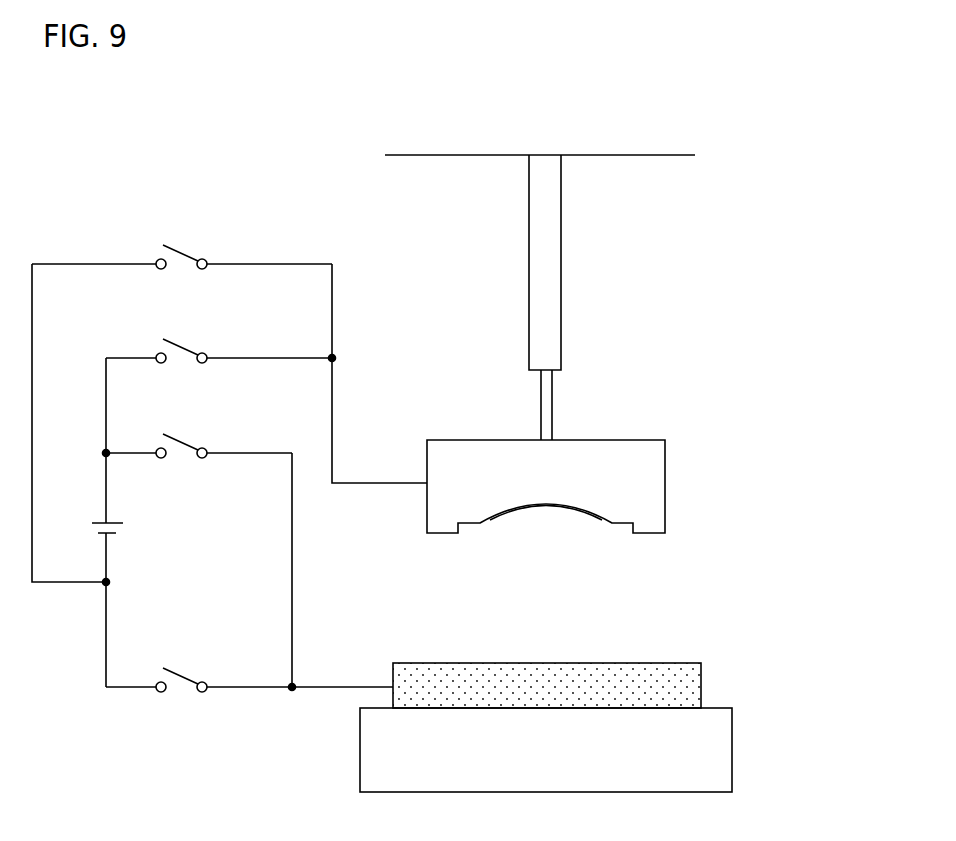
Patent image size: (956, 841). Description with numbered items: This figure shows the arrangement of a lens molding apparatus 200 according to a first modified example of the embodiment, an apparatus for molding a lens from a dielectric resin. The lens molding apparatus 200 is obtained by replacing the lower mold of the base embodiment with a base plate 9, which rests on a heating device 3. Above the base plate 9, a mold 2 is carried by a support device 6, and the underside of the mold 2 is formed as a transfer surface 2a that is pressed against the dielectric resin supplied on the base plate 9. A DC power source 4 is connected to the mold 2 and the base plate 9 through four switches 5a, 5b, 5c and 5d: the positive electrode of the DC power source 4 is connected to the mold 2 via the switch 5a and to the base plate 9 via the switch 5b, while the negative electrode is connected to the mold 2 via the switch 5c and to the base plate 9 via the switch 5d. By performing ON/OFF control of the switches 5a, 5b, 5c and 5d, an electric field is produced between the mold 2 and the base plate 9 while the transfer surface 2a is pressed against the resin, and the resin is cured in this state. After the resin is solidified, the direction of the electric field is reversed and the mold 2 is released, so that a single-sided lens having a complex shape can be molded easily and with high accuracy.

The lens molding apparatus 200 is at (591, 88).
The support device 6 is at (561, 305).
The mold 2 is at (665, 452).
The transfer surface 2a is at (552, 521).
The switch 5c is at (179, 248).
The switch 5a is at (179, 342).
The switch 5b is at (179, 437).
The switch 5d is at (179, 671).
The DC power source 4 is at (115, 522).
The base plate 9 is at (701, 687).
The heating device 3 is at (732, 752).